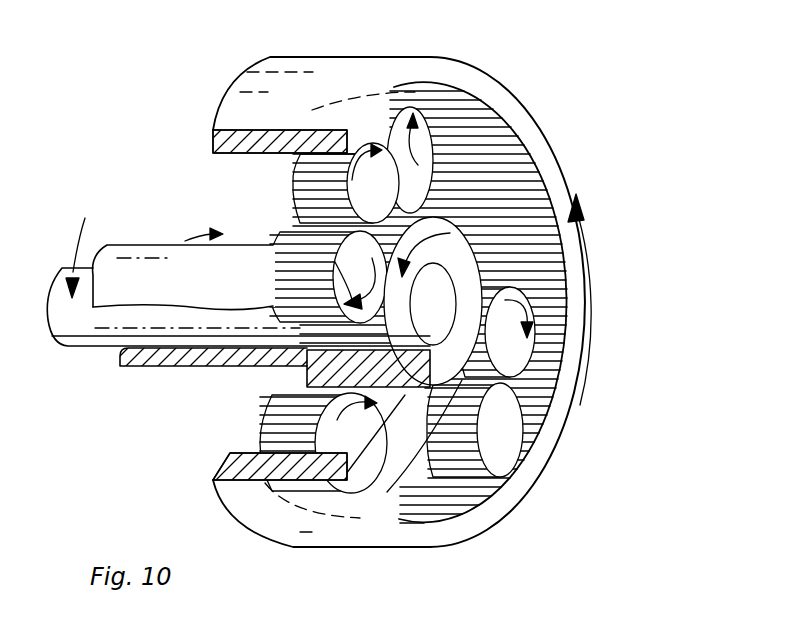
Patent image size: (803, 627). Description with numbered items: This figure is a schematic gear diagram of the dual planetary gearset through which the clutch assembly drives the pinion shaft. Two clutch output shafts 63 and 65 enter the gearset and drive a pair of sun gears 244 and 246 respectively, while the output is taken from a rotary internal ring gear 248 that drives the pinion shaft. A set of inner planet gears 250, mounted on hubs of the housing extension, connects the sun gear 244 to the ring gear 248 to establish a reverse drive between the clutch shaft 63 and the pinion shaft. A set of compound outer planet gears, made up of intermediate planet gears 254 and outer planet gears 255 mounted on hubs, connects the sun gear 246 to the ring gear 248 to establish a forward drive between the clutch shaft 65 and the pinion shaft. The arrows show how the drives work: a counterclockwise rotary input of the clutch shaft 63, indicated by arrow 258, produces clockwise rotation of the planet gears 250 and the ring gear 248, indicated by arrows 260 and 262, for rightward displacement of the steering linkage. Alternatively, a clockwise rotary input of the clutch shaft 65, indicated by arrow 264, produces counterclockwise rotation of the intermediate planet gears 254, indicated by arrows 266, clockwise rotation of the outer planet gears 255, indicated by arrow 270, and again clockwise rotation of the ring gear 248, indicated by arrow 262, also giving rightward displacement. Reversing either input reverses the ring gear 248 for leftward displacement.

The clutch output shaft 63 is at (163, 360).
The clutch output shaft 65 is at (118, 322).
The sun gear 244 is at (310, 365).
The sun gear 246 is at (420, 365).
The rotary internal (ring) gear 248 is at (538, 158).
The inner planet gears 250 is at (428, 95).
The intermediate planet gears 254 is at (292, 283).
The outer planet gears 255 is at (357, 178).
The arrow 258 is at (170, 268).
The arrow 260 is at (493, 115).
The arrow 262 is at (588, 243).
The arrow 264 is at (92, 246).
The arrows 266 is at (345, 287).
The arrow 270 is at (397, 112).